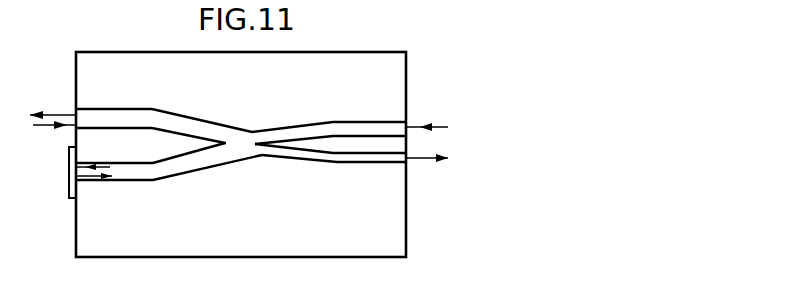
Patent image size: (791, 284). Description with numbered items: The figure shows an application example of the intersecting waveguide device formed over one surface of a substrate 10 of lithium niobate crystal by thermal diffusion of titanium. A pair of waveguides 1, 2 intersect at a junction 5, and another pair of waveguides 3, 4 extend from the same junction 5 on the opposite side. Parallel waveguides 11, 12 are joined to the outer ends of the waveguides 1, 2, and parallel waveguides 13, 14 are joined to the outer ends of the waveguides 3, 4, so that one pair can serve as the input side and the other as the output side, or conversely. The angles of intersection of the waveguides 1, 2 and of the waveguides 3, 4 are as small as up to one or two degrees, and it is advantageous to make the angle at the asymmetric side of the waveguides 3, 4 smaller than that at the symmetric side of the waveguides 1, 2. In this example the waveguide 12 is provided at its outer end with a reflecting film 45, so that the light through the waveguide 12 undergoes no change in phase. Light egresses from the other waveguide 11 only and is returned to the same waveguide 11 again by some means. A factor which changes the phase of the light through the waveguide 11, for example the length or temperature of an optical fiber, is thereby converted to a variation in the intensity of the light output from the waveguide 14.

The substrate 10 is at (397, 65).
The reflecting film 45 is at (70, 180).
The waveguide 11 is at (125, 117).
The waveguide 1 is at (196, 125).
The waveguide 12 is at (122, 177).
The waveguide 2 is at (198, 165).
The junction 5 is at (246, 148).
The waveguide 3 is at (305, 127).
The waveguide 13 is at (370, 127).
The waveguide 4 is at (317, 163).
The waveguide 14 is at (375, 162).